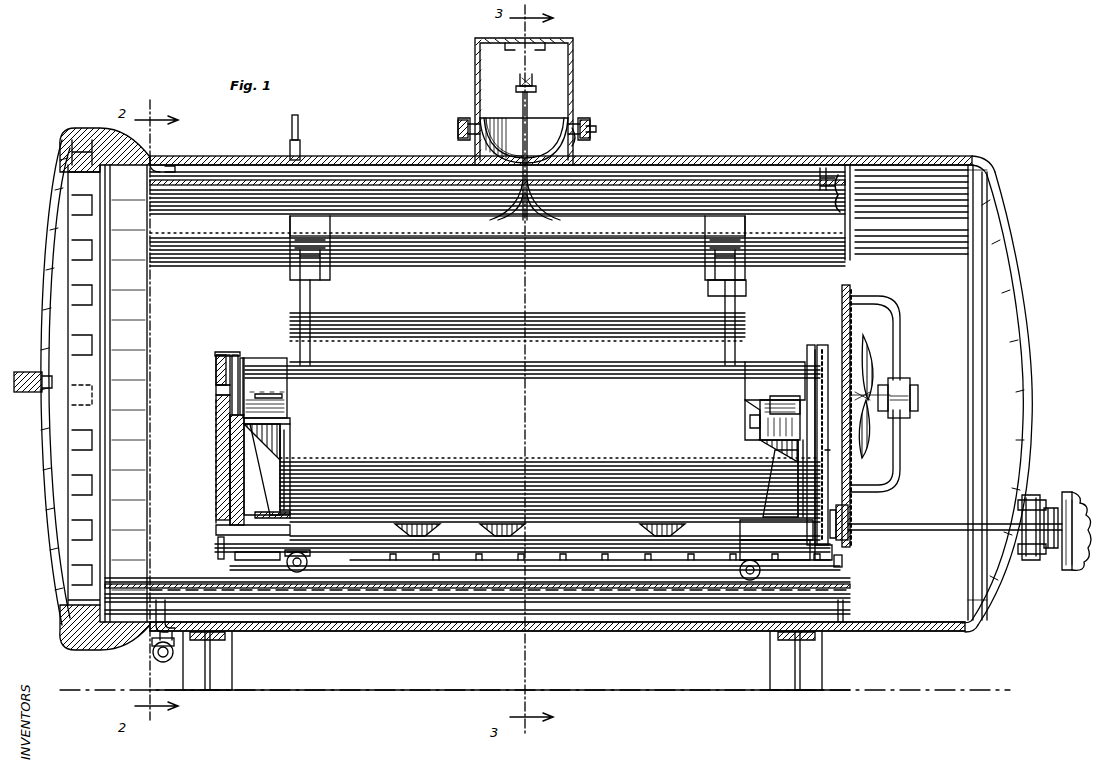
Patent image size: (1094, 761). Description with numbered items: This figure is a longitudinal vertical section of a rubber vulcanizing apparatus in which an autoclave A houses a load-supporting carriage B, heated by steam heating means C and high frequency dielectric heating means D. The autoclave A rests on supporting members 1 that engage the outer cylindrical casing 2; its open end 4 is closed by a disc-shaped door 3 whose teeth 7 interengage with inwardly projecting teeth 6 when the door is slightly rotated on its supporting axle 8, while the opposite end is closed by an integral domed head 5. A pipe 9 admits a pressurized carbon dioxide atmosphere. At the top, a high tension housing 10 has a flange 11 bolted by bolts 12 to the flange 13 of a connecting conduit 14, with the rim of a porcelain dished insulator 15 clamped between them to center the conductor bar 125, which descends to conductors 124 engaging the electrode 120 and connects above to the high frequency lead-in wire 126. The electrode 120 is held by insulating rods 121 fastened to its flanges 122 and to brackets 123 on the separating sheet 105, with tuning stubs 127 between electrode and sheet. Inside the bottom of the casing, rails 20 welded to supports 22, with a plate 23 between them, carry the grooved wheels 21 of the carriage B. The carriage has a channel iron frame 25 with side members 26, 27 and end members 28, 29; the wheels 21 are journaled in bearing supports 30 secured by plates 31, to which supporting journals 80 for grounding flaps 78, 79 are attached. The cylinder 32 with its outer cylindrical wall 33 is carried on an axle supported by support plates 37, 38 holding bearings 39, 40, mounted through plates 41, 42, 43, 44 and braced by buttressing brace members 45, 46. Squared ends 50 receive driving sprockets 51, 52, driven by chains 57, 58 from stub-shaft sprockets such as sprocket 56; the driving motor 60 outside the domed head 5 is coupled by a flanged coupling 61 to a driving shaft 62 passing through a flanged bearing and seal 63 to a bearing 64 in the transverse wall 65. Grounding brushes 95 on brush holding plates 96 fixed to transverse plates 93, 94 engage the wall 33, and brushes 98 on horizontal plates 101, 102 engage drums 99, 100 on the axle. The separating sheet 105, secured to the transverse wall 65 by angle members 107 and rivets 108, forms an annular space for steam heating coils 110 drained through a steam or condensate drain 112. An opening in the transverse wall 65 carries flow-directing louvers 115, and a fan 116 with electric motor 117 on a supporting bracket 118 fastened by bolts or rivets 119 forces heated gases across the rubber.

The supporting members 1 is at (225, 657).
The outer cylindrical casing 2 is at (905, 622).
The disc-shaped door 3 is at (40, 268).
The open end 4 is at (90, 135).
The domed head 5 is at (1010, 290).
The inwardly projecting teeth 6 is at (78, 135).
The door teeth 7 is at (92, 315).
The supporting axle 8 is at (28, 372).
The pipe 9 is at (290, 128).
The high tension housing 10 is at (478, 64).
The flange 11 is at (592, 126).
The bolts 12 is at (468, 122).
The flange 13 is at (594, 132).
The connecting conduit 14 is at (578, 146).
The porcelain dished insulator 15 is at (478, 146).
The rails 20 is at (190, 572).
The grooved wheels 21 is at (285, 565).
The supports 22 is at (128, 576).
The plate 23 is at (162, 580).
The channel iron frame 25 is at (480, 500).
The side member 26 is at (522, 538).
The side member 27 is at (348, 528).
The end member 28 is at (240, 528).
The end member 29 is at (800, 531).
The bearing supports 30 is at (300, 550).
The plates 31 is at (245, 555).
The cylinder 32 is at (494, 379).
The outer cylindrical wall 33 is at (425, 376).
The support plate 37 is at (216, 430).
The support plate 38 is at (830, 450).
The bearing 39 is at (238, 356).
The bearing 40 is at (810, 362).
The plate 41 is at (216, 502).
The plate 42 is at (216, 484).
The plate 43 is at (830, 550).
The plate 44 is at (780, 483).
The buttressing brace member 45 is at (258, 468).
The buttressing brace member 46 is at (791, 478).
The squared ends 50 is at (216, 392).
The driving sprocket 51 is at (215, 372).
The driving sprocket 52 is at (824, 368).
The sprocket 56 is at (848, 512).
The driving chain 57 is at (216, 454).
The driving chain 58 is at (838, 476).
The driving motor 60 is at (1080, 490).
The flanged coupling 61 is at (1050, 508).
The driving shaft 62 is at (905, 528).
The flanged bearing and seal 63 is at (1018, 552).
The bearing 64 is at (846, 542).
The transverse wall 65 is at (855, 258).
The grounding flap 78 is at (535, 571).
The grounding flap 79 is at (550, 560).
The supporting journals 80 is at (232, 548).
The transverse plate 93 is at (286, 466).
The transverse plate 94 is at (776, 530).
The brushes 95 is at (758, 392).
The brush holding plates 96 is at (758, 420).
The grounding brushes 98 is at (258, 392).
The drum 99 is at (273, 358).
The drum 100 is at (772, 362).
The horizontal plate 101 is at (270, 438).
The horizontal plate 102 is at (770, 440).
The separating sheet 105 is at (390, 170).
The angle members 107 is at (852, 225).
The rivets 108 is at (850, 215).
The steam heating coils 110 is at (715, 160).
The steam or condensate drain 112 is at (138, 650).
The flow-directing louvers 115 is at (852, 325).
The fan 116 is at (880, 342).
The electric motor 117 is at (912, 418).
The supporting bracket 118 is at (908, 460).
The bolts or rivets 119 is at (856, 300).
The electrode 120 is at (748, 296).
The insulating rods 121 is at (298, 303).
The flanges 122 is at (606, 374).
The brackets 123 is at (325, 280).
The conductors 124 is at (508, 220).
The conductor bar 125 is at (522, 92).
The high frequency lead-in wire 126 is at (530, 78).
The tuning stubs 127 is at (622, 225).
The autoclave A is at (768, 156).
The load-supporting carriage B is at (211, 358).
The steam heating means C is at (228, 165).
The high frequency dielectric heating means D is at (441, 270).